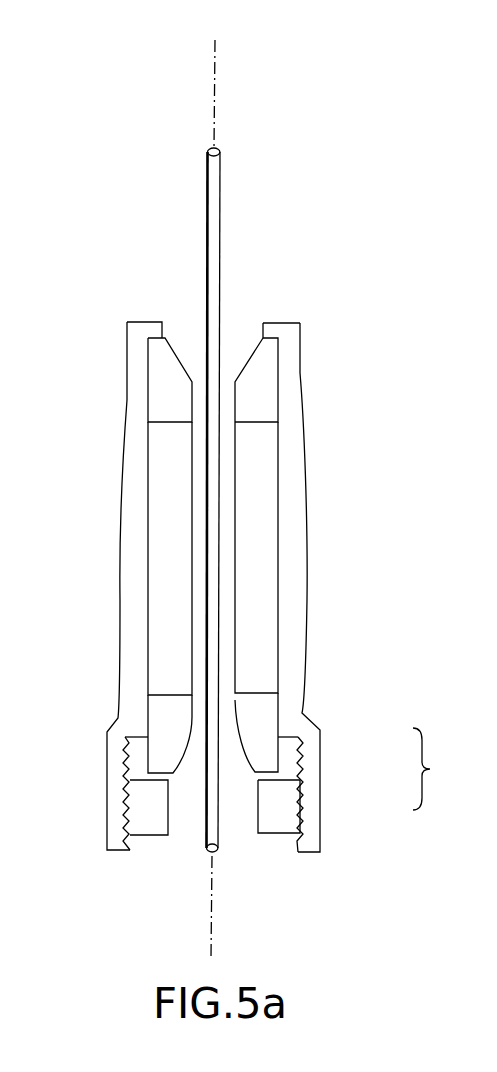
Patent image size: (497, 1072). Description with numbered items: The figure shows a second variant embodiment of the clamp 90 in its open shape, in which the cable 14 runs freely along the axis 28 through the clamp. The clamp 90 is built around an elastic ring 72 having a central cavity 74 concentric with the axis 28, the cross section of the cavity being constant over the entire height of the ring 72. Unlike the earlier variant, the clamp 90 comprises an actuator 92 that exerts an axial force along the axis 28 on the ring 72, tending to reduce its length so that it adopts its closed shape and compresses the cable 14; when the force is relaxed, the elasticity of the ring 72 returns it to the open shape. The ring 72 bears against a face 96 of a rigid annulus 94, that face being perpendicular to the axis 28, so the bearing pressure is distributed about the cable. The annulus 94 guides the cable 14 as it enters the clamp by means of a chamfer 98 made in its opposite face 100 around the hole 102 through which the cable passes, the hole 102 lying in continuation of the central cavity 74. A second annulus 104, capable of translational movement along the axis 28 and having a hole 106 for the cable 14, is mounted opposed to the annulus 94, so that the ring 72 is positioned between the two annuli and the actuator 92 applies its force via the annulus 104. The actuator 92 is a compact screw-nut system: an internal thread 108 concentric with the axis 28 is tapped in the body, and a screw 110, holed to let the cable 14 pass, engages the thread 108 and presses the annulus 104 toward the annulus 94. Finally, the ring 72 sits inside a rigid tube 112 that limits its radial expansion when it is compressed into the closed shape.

The axis 28 is at (215, 97).
The cable 14 is at (220, 235).
The clamp 90 is at (428, 292).
The actuator 92 is at (448, 769).
The rigid annulus 94 is at (262, 380).
The face 96 is at (257, 420).
The chamfer 98 is at (178, 357).
The face 100 is at (150, 338).
The hole 102 is at (228, 377).
The ring 72 is at (260, 567).
The central cavity 74 is at (202, 482).
The second annulus 104 is at (162, 705).
The hole 106 is at (197, 727).
The internal thread 108 is at (297, 768).
The screw 110 is at (278, 808).
The rigid tube 112 is at (135, 536).